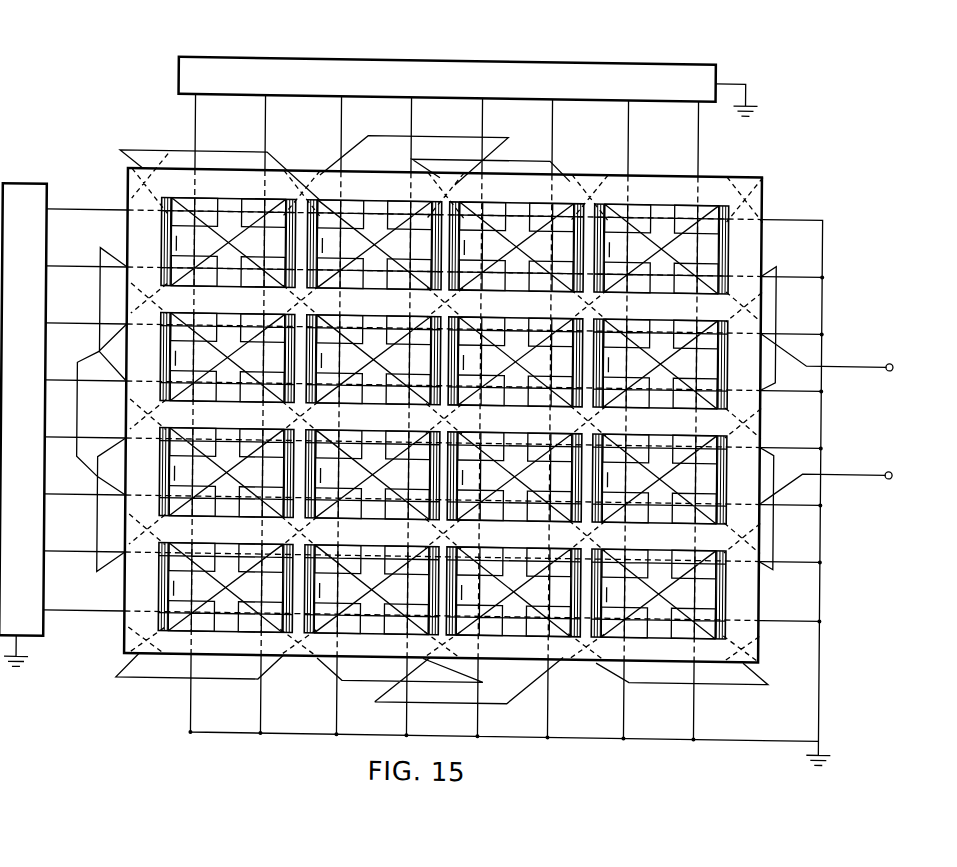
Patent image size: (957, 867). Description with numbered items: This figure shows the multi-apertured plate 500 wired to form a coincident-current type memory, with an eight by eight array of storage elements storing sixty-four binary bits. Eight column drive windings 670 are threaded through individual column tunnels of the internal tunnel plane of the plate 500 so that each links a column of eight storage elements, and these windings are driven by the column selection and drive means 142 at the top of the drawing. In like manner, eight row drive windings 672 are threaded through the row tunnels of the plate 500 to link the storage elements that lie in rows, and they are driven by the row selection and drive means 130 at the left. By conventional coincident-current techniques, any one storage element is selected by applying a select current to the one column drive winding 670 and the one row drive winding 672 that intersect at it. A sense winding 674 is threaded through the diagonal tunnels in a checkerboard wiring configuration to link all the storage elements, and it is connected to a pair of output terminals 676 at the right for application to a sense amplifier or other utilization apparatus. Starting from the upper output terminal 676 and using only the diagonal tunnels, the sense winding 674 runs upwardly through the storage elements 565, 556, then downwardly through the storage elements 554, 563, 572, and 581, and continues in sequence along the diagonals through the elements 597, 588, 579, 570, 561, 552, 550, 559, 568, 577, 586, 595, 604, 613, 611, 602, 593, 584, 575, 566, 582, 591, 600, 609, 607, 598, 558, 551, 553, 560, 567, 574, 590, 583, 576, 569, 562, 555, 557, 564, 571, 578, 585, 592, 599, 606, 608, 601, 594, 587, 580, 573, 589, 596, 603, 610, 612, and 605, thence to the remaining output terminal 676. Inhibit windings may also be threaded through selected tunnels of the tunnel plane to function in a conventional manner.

The row selection and drive means 130 is at (24, 185).
The column selection and drive means 142 is at (178, 73).
The multi-apertured plate 500 is at (772, 167).
The column drive windings 670 is at (265, 120).
The row drive windings 672 is at (69, 212).
The sense winding 674 is at (154, 150).
The output terminals 676 is at (895, 359).
The storage element 550 is at (206, 201).
The storage element 551 is at (260, 203).
The storage element 552 is at (352, 201).
The storage element 553 is at (406, 203).
The storage element 554 is at (494, 201).
The storage element 555 is at (548, 203).
The storage element 556 is at (639, 201).
The storage element 557 is at (693, 203).
The storage element 558 is at (200, 261).
The storage element 559 is at (277, 261).
The storage element 560 is at (346, 261).
The storage element 561 is at (423, 261).
The storage element 562 is at (488, 261).
The storage element 563 is at (565, 261).
The storage element 564 is at (633, 261).
The storage element 565 is at (710, 261).
The storage element 566 is at (206, 316).
The storage element 567 is at (260, 318).
The storage element 568 is at (352, 316).
The storage element 569 is at (406, 318).
The storage element 570 is at (494, 316).
The storage element 571 is at (548, 318).
The storage element 572 is at (639, 316).
The storage element 573 is at (693, 318).
The storage element 574 is at (200, 376).
The storage element 575 is at (277, 376).
The storage element 576 is at (346, 376).
The storage element 577 is at (423, 376).
The storage element 578 is at (488, 376).
The storage element 579 is at (565, 376).
The storage element 580 is at (633, 376).
The storage element 581 is at (710, 376).
The storage element 582 is at (206, 431).
The storage element 583 is at (260, 433).
The storage element 584 is at (352, 431).
The storage element 585 is at (406, 433).
The storage element 586 is at (494, 431).
The storage element 587 is at (548, 433).
The storage element 588 is at (639, 431).
The storage element 589 is at (693, 433).
The storage element 590 is at (200, 491).
The storage element 591 is at (277, 491).
The storage element 592 is at (346, 491).
The storage element 593 is at (423, 491).
The storage element 594 is at (488, 491).
The storage element 595 is at (565, 491).
The storage element 596 is at (633, 491).
The storage element 597 is at (710, 491).
The storage element 598 is at (206, 546).
The storage element 599 is at (260, 548).
The storage element 600 is at (352, 546).
The storage element 601 is at (406, 548).
The storage element 602 is at (494, 546).
The storage element 603 is at (548, 548).
The storage element 604 is at (639, 546).
The storage element 605 is at (693, 548).
The storage element 606 is at (200, 606).
The storage element 607 is at (277, 606).
The storage element 608 is at (346, 606).
The storage element 609 is at (423, 606).
The storage element 610 is at (488, 606).
The storage element 611 is at (565, 606).
The storage element 612 is at (633, 606).
The storage element 613 is at (710, 606).